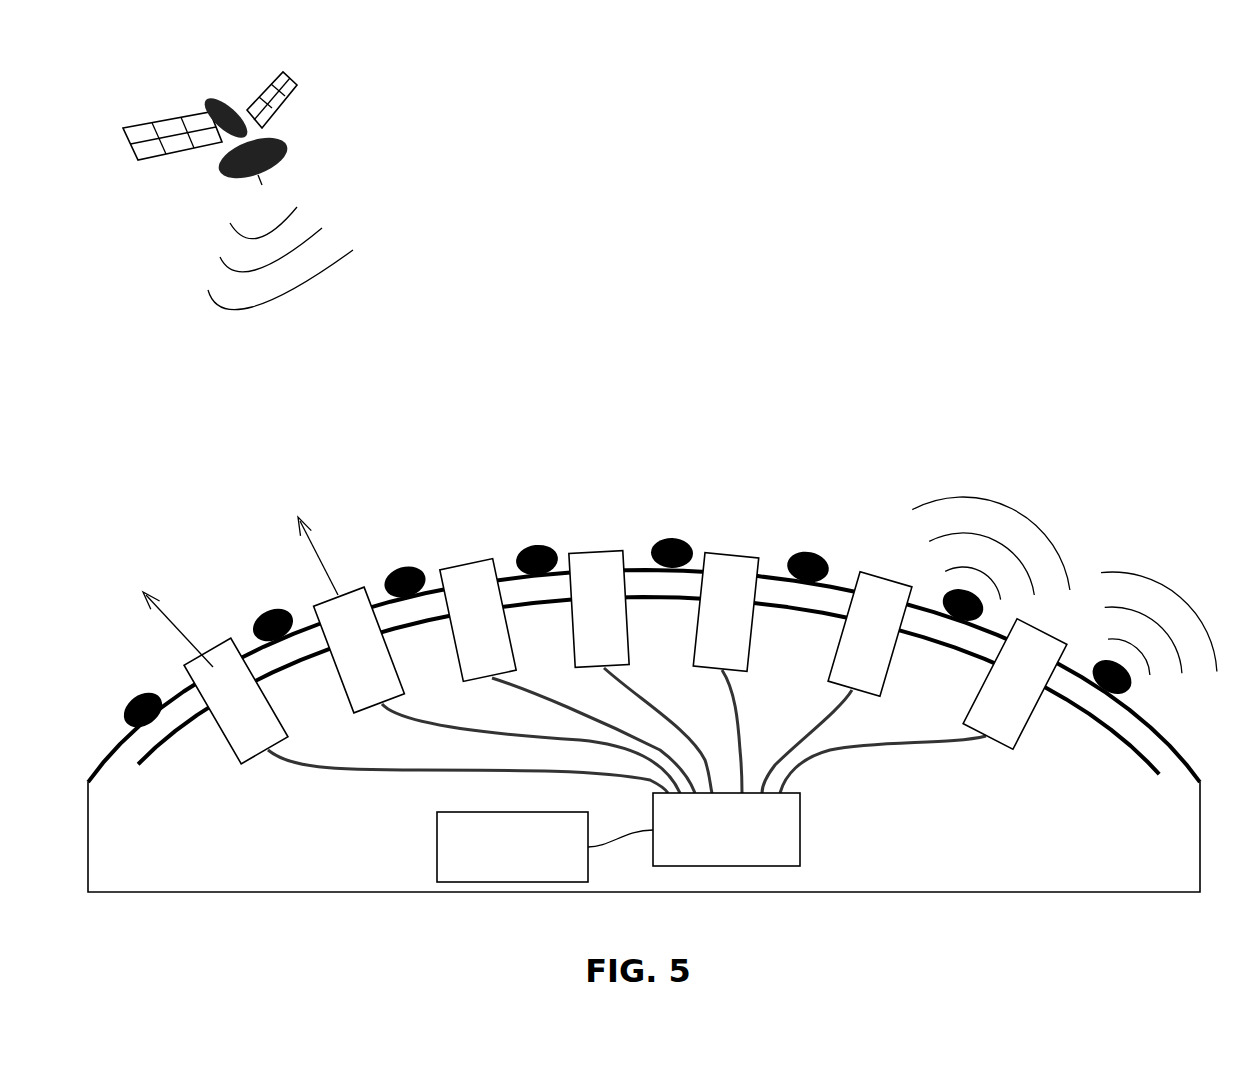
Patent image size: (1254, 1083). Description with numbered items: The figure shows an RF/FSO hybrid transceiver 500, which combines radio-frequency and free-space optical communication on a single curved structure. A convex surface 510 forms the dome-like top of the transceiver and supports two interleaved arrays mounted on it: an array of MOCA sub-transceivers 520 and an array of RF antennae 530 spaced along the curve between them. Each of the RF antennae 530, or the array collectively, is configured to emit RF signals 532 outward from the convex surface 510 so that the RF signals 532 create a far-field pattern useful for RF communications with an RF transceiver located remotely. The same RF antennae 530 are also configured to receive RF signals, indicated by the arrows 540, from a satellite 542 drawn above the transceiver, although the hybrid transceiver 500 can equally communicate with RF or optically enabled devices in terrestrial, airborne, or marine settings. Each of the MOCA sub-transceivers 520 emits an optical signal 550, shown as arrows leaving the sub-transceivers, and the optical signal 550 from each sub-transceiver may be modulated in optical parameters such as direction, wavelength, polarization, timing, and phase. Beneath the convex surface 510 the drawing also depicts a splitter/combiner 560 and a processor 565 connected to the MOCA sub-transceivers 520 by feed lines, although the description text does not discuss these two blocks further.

The RF/FSO hybrid transceiver 500 is at (1018, 368).
The convex surface 510 is at (172, 738).
The MOCA sub-transceivers 520 is at (226, 646).
The RF antennae 530 is at (543, 547).
The RF signals 532 is at (940, 436).
The arrows 540 is at (200, 208).
The satellite 542 is at (372, 119).
The optical signal 550 is at (170, 615).
The splitter/combiner 560 is at (800, 830).
The processor 565 is at (437, 850).